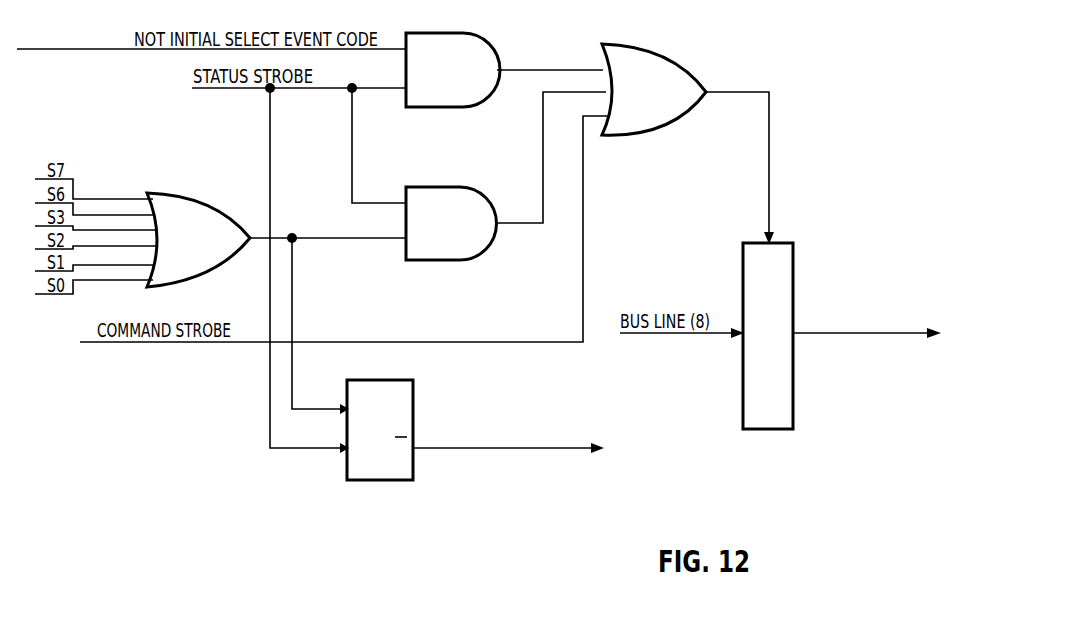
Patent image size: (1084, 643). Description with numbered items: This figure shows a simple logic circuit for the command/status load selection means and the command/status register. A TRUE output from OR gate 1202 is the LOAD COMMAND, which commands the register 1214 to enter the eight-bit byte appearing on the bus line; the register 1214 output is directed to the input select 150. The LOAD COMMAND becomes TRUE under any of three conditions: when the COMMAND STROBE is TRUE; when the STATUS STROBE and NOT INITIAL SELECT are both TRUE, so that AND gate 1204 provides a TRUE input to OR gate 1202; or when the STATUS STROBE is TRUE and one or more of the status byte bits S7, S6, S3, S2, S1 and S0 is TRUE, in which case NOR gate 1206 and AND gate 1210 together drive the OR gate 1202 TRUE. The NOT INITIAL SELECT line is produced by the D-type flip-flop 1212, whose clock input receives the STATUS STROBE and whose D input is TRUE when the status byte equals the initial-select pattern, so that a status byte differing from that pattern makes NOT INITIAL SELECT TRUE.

The OR gate 1202 is at (677, 64).
The AND gate 1204 is at (486, 43).
The NOR gate 1206 is at (197, 198).
The AND gate 1210 is at (478, 190).
The D-type flip-flop 1212 is at (405, 380).
The register 1214 is at (745, 430).
The input select 150 is at (867, 332).